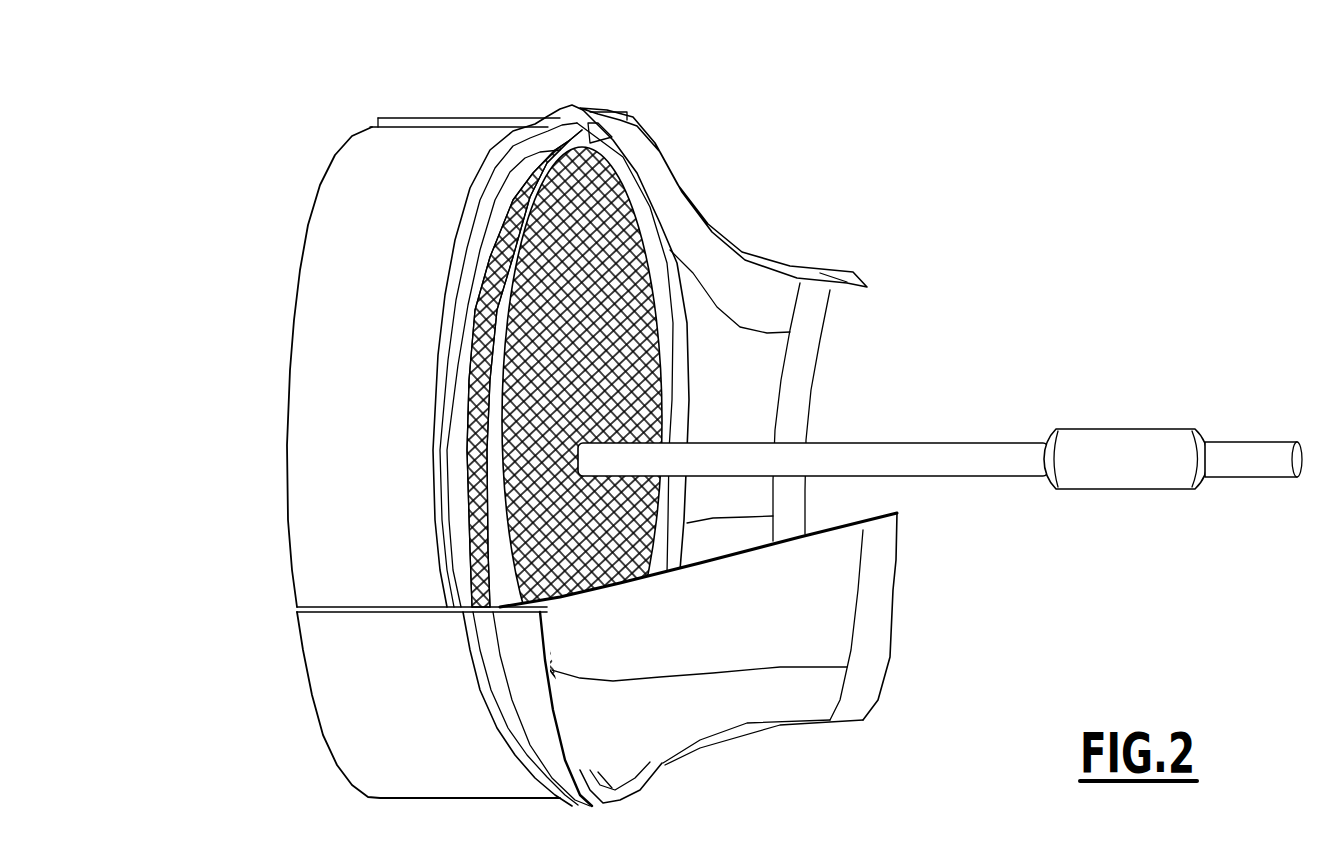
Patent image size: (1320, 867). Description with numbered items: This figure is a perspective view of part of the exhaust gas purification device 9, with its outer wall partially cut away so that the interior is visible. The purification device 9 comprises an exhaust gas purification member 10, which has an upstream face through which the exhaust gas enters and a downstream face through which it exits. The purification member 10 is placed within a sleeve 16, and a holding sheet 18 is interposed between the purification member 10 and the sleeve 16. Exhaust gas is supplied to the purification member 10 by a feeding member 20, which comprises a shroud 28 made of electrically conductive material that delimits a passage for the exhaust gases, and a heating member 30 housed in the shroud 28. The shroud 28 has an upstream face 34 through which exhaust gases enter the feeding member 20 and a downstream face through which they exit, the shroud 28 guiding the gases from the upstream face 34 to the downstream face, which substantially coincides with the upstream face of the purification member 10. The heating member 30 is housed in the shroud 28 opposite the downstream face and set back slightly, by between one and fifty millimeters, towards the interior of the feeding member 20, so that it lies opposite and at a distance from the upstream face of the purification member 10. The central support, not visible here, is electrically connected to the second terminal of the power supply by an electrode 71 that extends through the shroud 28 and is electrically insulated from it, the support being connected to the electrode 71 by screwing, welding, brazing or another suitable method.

The exhaust gas purification device 9 is at (734, 448).
The exhaust gas purification member 10 is at (509, 411).
The sleeve 16 is at (425, 733).
The holding sheet 18 is at (363, 362).
The feeding member 20 is at (723, 163).
The shroud 28 is at (698, 658).
The heating member 30 is at (603, 356).
The upstream face 34 is at (799, 395).
The electrode 71 is at (940, 414).